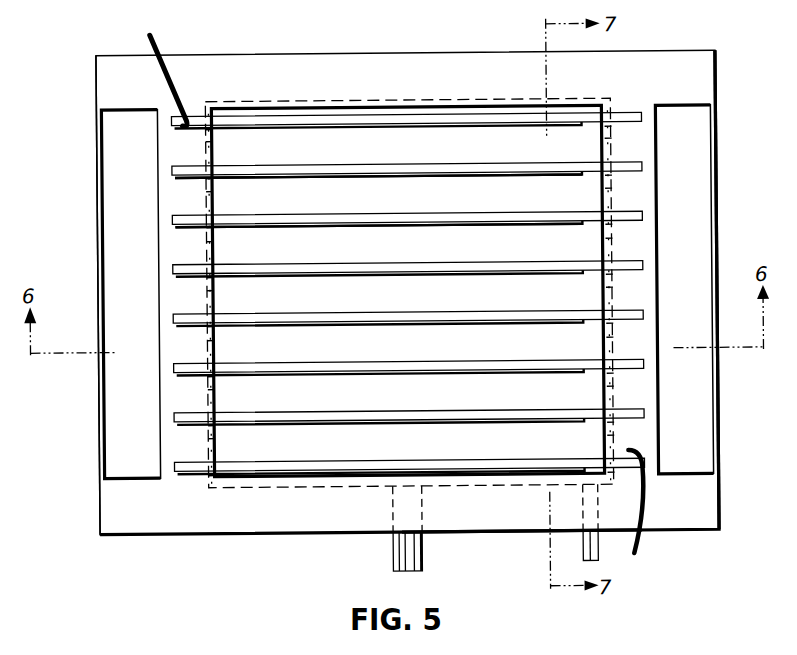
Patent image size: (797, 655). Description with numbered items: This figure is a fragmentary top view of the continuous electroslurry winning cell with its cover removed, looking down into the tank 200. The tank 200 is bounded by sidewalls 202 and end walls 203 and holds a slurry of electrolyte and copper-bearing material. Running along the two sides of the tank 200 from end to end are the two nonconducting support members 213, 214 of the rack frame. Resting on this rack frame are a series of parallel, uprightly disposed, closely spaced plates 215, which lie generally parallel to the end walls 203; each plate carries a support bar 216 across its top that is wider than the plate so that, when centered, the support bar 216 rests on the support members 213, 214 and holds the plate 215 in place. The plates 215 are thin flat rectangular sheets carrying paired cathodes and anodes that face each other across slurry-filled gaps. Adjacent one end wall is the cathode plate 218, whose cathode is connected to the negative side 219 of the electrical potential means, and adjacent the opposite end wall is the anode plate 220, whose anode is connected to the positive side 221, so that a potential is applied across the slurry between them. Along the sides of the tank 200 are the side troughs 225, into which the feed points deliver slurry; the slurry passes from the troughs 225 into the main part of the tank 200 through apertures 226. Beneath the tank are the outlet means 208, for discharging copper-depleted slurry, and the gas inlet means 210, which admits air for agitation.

The tank 200 is at (519, 534).
The sidewalls 202 is at (97, 190).
The end walls 203 is at (399, 53).
The outlet means 208 is at (402, 573).
The gas inlet means 210 is at (589, 564).
The support member 213 is at (195, 299).
The support member 214 is at (619, 195).
The plates 215 is at (488, 176).
The support bar 216 is at (553, 215).
The cathode plate 218 is at (204, 469).
The negative side of electrical potential means 219 is at (668, 548).
The anode plate 220 is at (591, 112).
The positive side of electrical potential means 221 is at (196, 46).
The side troughs 225 is at (407, 292).
The apertures 226 is at (208, 391).